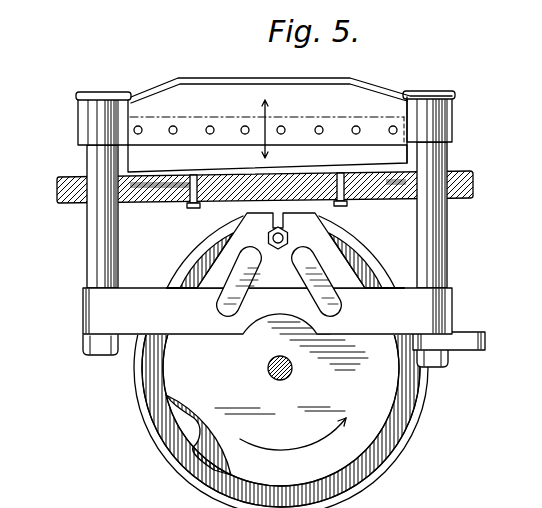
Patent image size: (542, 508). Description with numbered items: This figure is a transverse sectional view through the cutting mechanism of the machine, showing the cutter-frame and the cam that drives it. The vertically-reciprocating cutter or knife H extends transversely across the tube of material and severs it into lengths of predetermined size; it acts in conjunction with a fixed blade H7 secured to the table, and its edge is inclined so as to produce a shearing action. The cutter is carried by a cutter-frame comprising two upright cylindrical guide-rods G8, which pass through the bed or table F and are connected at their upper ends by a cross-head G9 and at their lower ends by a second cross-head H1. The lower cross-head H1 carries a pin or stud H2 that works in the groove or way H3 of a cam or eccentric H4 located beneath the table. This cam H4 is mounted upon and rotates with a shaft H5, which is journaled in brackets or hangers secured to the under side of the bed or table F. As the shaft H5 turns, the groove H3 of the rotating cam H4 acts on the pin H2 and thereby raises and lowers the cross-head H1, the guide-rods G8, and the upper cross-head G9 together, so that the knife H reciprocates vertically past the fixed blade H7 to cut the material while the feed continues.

The cross-head G9 is at (265, 101).
The cutter H is at (68, 141).
The upright guide-rods G8 is at (456, 253).
The fixed blade H7 is at (222, 178).
The bed or table F is at (247, 196).
The cam or eccentric H4 is at (178, 259).
The pin or stud H2 is at (288, 238).
The groove or way H3 is at (360, 264).
The cross-head H1 is at (160, 321).
The shaft H5 is at (267, 368).